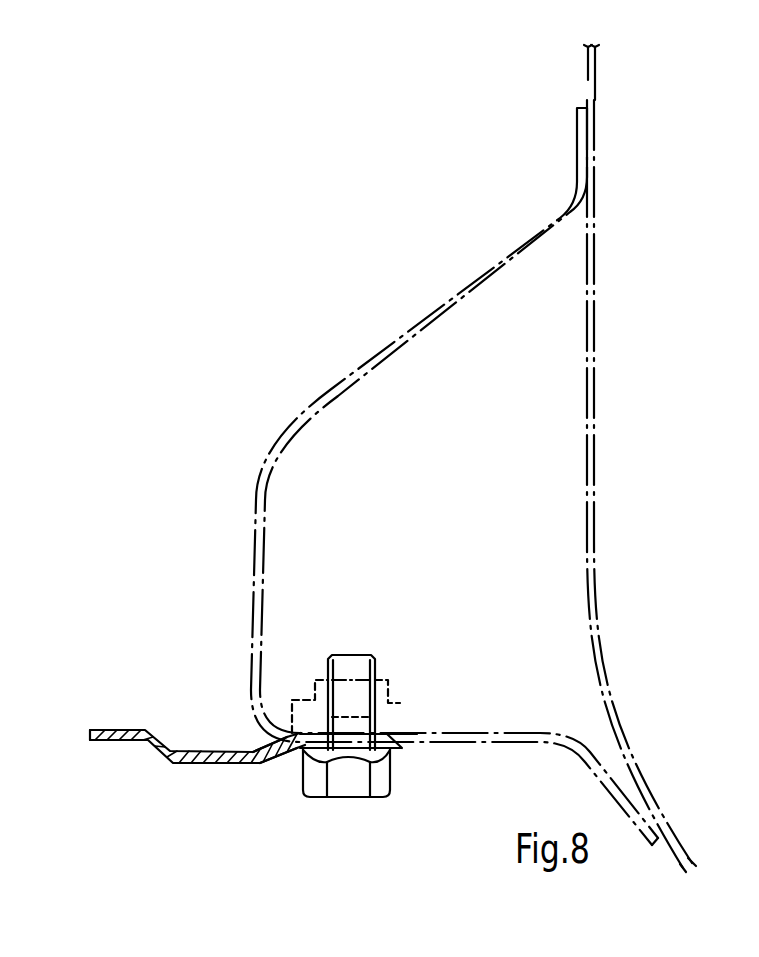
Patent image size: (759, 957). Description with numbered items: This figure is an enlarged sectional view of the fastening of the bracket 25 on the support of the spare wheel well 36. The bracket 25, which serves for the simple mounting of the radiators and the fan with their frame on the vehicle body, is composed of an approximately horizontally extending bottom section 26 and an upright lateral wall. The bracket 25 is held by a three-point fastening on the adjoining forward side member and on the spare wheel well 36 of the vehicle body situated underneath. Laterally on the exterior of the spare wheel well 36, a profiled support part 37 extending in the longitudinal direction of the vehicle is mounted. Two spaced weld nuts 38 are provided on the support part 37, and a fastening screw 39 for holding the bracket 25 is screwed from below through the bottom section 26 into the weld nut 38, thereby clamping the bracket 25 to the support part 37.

The bracket 25 is at (100, 745).
The bottom section 26 is at (267, 768).
The spare wheel well 36 is at (578, 87).
The support part 37 is at (314, 390).
The weld nut 38 is at (403, 705).
The fastening screw 39 is at (350, 780).